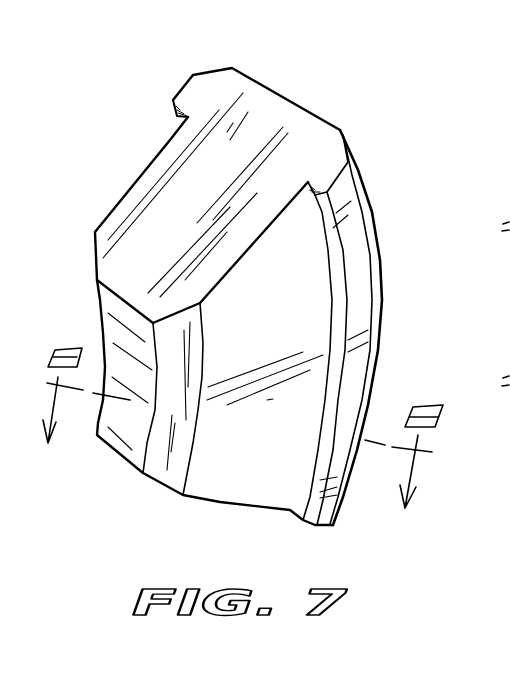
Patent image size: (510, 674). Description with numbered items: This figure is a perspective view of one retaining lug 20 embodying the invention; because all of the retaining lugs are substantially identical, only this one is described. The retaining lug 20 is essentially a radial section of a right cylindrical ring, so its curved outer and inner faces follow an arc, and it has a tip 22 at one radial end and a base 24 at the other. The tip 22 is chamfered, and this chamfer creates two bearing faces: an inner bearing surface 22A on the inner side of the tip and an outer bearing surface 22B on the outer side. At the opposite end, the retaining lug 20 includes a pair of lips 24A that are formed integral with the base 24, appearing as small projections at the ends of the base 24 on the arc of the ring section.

The retaining lug 20 is at (279, 76).
The tip 22 is at (135, 450).
The inner bearing surface 22A is at (163, 490).
The outer bearing surface 22B is at (95, 250).
The base 24 is at (330, 118).
The lips 24A is at (185, 85).